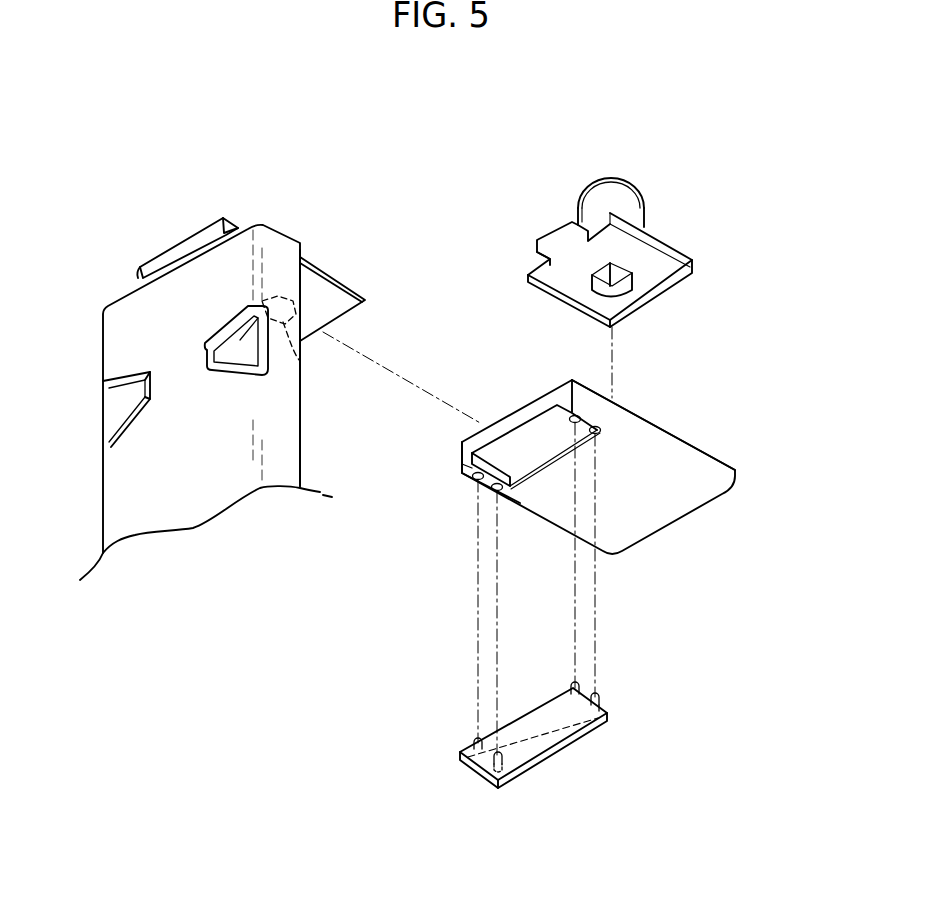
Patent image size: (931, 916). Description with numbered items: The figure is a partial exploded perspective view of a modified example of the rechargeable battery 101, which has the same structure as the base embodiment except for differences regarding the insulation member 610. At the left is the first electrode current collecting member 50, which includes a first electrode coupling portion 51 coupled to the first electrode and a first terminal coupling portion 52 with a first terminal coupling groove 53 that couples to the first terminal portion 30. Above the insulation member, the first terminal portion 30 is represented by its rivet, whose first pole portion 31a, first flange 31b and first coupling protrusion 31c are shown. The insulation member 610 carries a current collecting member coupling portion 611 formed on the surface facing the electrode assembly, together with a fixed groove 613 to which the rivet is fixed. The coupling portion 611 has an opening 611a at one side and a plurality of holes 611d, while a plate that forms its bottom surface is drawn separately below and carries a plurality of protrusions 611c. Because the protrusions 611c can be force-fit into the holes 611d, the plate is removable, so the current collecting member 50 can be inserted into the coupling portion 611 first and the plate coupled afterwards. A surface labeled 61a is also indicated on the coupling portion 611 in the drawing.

The rechargeable battery 101 is at (428, 117).
The first electrode current collecting member 50 is at (116, 292).
The first electrode coupling portion 51 is at (283, 438).
The first terminal coupling portion 52 is at (327, 270).
The first terminal coupling groove 53 is at (298, 365).
The first terminal portion 30 is at (765, 232).
The first pole portion 31a is at (633, 215).
The first flange 31b is at (668, 282).
The first coupling protrusion 31c is at (620, 288).
The insulation member 610 is at (731, 465).
The fixed groove 613 is at (673, 437).
The sensor element top 61a is at (528, 433).
The current collecting member coupling portion 611 is at (526, 481).
The opening 611a is at (463, 465).
The holes 611d is at (477, 481).
The protrusions 611c is at (603, 703).